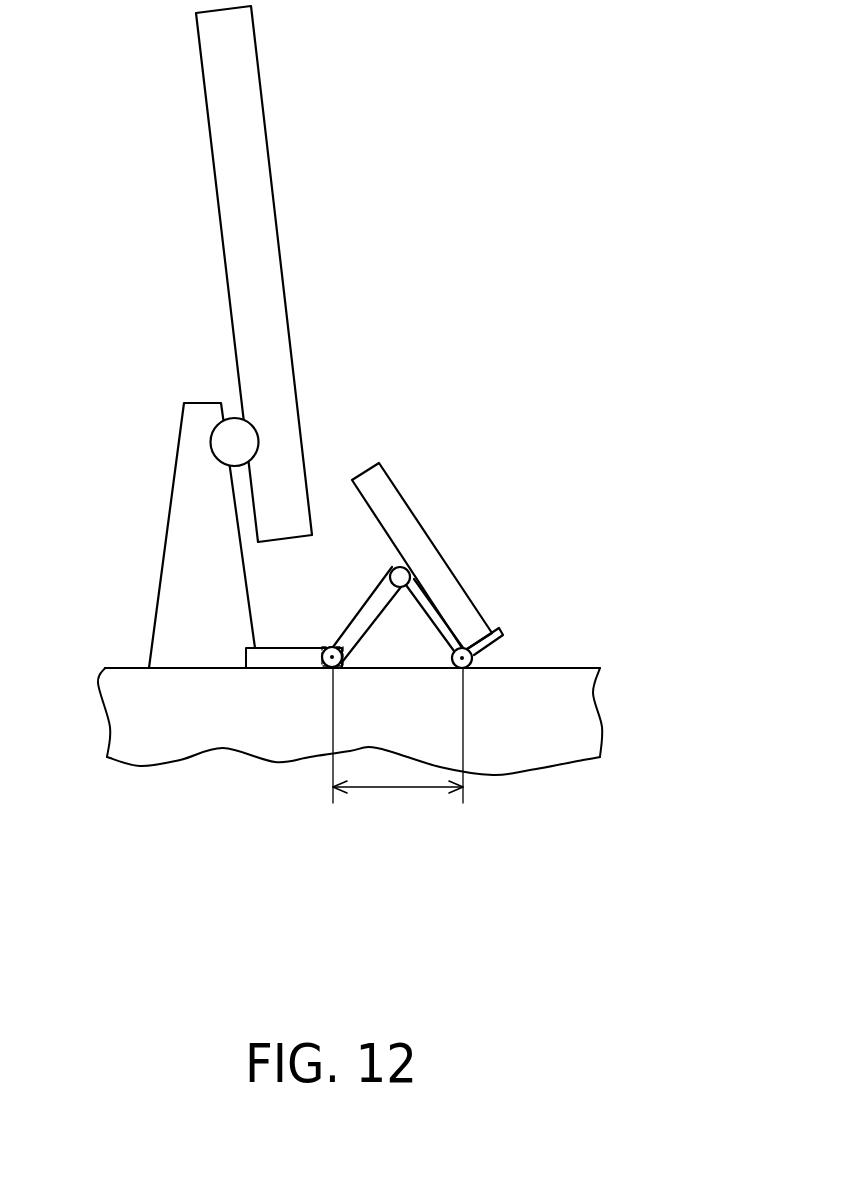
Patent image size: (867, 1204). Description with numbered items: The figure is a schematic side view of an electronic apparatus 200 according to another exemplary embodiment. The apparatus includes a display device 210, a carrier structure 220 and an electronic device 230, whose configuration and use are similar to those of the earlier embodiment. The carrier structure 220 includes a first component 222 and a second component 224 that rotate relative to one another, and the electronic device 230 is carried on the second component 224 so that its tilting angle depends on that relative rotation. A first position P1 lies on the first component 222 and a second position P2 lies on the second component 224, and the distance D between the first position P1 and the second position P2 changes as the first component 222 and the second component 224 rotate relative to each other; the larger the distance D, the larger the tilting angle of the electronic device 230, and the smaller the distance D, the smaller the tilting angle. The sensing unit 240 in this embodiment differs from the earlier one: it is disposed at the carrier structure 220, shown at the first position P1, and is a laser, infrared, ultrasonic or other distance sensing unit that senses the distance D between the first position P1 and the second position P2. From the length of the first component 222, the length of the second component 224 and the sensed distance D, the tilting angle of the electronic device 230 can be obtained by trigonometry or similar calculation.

The electronic apparatus 200 is at (730, 881).
The display device 210 is at (193, 278).
The carrier structure 220 is at (320, 593).
The first component 222 is at (373, 605).
The second component 224 is at (423, 593).
The electronic device 230 is at (467, 615).
The sensing unit 240 is at (315, 650).
The first position P1 is at (323, 664).
The second position P2 is at (468, 662).
The distance D is at (398, 754).